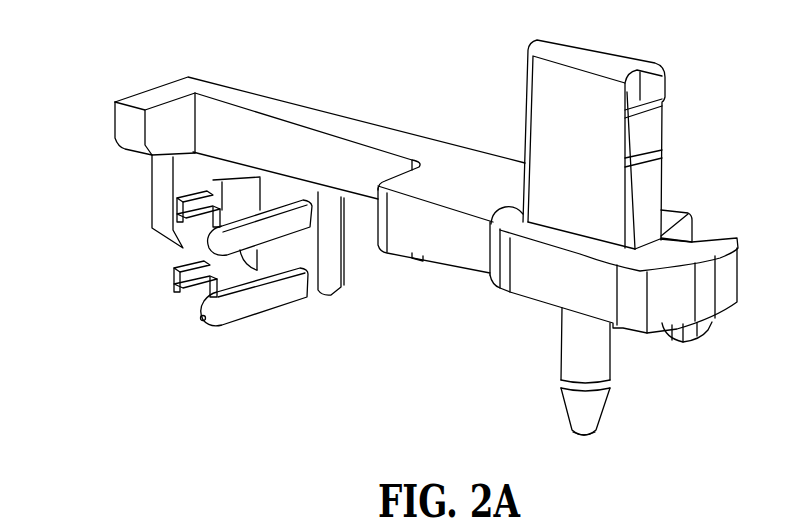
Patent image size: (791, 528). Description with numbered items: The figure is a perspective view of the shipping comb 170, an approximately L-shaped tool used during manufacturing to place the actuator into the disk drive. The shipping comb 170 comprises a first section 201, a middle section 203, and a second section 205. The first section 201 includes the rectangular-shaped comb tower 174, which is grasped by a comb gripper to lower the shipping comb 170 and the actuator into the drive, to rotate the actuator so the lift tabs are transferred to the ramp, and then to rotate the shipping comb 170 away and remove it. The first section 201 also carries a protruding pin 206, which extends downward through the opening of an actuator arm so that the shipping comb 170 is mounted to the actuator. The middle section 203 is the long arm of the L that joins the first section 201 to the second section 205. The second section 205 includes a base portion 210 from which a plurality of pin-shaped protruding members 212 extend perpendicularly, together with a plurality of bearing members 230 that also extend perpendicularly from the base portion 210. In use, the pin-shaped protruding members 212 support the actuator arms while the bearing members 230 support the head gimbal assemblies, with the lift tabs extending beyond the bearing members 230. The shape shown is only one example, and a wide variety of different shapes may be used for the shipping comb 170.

The shipping comb 170 is at (327, 61).
The comb tower 174 is at (601, 56).
The first section 201 is at (541, 337).
The middle section 203 is at (390, 132).
The second section 205 is at (118, 194).
The protruding pin 206 is at (575, 360).
The base portion 210 is at (332, 263).
The pin-shaped protruding members 212 is at (210, 248).
The bearing members 230 is at (183, 203).